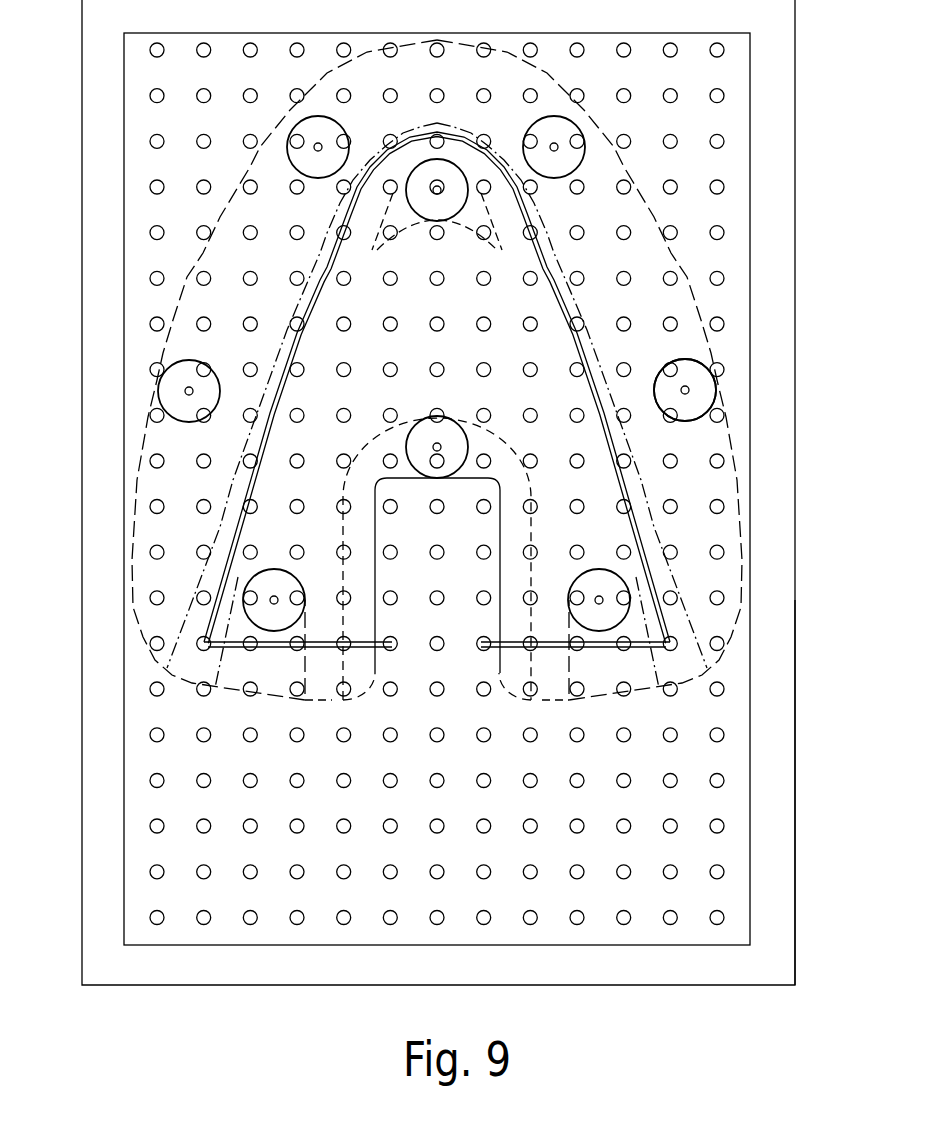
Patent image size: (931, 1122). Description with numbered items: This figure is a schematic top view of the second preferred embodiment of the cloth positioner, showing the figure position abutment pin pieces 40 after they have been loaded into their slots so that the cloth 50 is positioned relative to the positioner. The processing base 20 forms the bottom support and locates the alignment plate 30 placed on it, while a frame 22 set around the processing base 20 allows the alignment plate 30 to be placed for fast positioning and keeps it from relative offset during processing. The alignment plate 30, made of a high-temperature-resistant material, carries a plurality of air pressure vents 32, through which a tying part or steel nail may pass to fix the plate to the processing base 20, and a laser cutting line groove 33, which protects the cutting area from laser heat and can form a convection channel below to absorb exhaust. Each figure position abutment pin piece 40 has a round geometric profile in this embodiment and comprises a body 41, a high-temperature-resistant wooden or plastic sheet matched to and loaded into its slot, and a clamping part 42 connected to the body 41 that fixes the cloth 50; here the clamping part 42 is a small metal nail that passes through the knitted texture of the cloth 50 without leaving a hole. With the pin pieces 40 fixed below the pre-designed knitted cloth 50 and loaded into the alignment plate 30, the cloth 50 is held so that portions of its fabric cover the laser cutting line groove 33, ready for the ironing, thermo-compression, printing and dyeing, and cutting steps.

The processing base 20 is at (558, 992).
The frame 22 is at (655, 976).
The alignment plate 30 is at (268, 950).
The air pressure vents 32 is at (300, 926).
The laser cutting line groove 33 is at (283, 390).
The figure position abutment pin piece 40 is at (289, 127).
The body 41 is at (697, 418).
The clamping part 42 is at (686, 386).
The cloth 50 is at (700, 298).